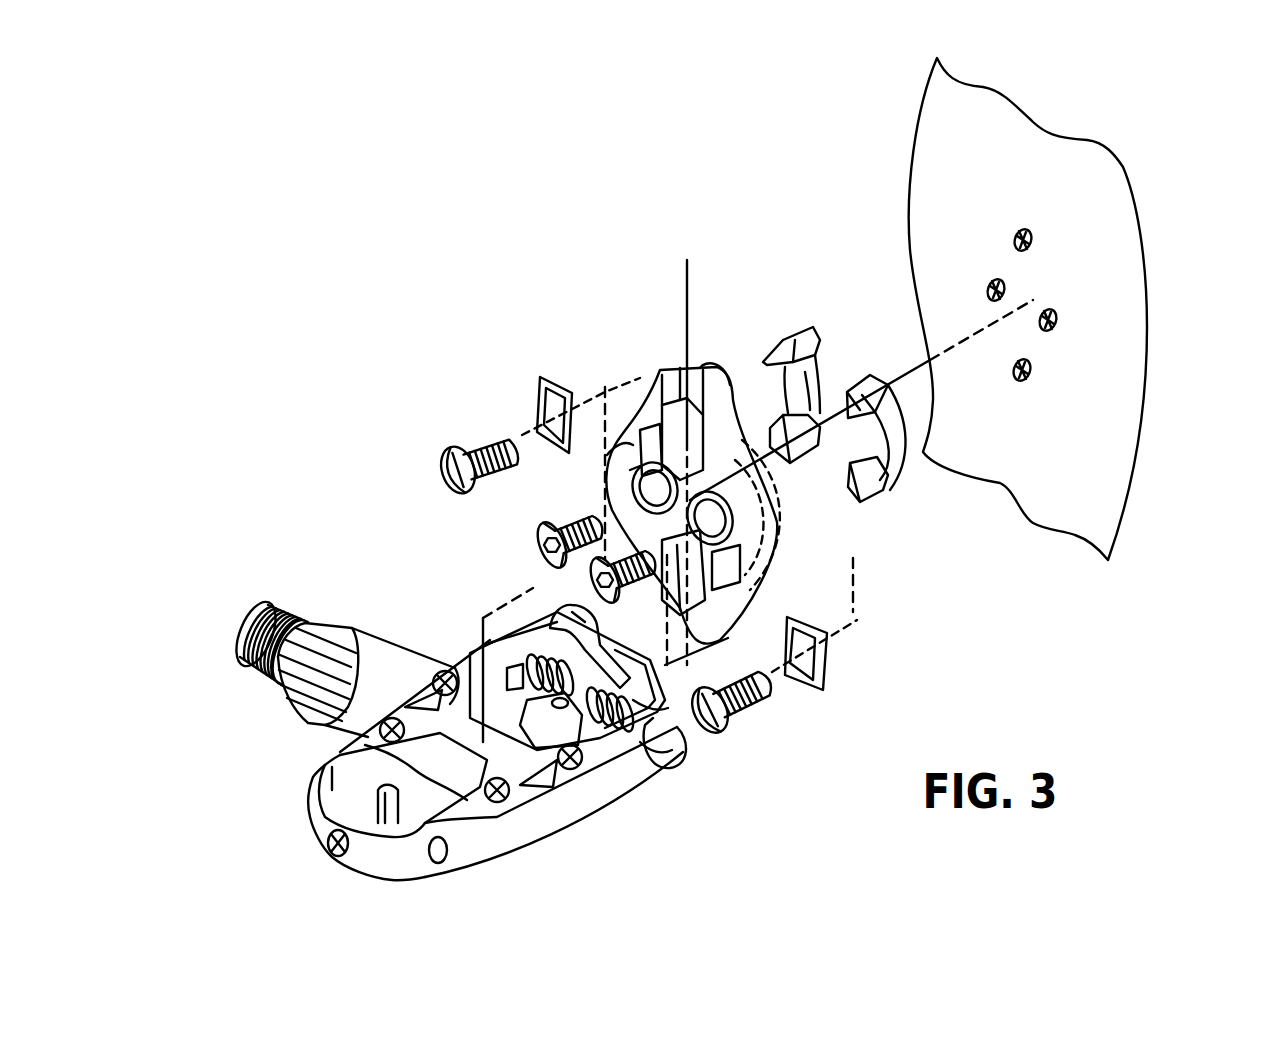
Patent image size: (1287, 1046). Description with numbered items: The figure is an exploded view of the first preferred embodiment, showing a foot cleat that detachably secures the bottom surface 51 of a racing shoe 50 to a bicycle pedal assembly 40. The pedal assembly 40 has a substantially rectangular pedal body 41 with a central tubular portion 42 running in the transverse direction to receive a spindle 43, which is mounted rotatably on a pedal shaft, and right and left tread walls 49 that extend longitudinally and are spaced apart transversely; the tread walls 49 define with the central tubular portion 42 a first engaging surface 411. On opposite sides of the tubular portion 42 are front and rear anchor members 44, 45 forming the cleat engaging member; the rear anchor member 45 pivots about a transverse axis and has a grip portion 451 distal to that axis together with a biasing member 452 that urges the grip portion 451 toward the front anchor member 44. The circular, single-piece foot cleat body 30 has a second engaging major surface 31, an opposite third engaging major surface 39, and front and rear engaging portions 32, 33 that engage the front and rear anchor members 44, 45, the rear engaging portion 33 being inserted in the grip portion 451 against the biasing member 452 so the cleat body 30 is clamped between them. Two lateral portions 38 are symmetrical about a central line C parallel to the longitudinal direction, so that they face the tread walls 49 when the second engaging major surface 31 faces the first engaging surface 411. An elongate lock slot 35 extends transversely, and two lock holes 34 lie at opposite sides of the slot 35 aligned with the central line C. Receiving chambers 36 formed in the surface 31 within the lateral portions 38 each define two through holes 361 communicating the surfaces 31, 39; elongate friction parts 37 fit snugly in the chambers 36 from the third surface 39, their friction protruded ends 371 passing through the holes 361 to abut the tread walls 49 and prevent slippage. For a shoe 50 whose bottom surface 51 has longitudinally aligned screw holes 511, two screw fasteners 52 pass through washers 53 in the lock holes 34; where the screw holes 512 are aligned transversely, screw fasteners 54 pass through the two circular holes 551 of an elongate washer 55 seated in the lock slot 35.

The foot cleat body 30 is at (731, 451).
The second engaging major surface 31 is at (625, 420).
The front engaging portion 32 is at (680, 368).
The rear engaging portion 33 is at (716, 649).
The lock holes 34 is at (673, 363).
The elongate lock slot 35 is at (617, 480).
The receiving chambers 36 is at (768, 540).
The through holes 361 is at (752, 489).
The elongate friction parts 37 is at (768, 434).
The friction protruded ends 371 is at (850, 400).
The lateral portions 38 is at (620, 443).
The third engaging major surface 39 is at (732, 382).
The bicycle pedal assembly 40 is at (474, 732).
The pedal body 41 is at (526, 771).
The first engaging surface 411 is at (510, 775).
The central tubular portion 42 is at (435, 757).
The spindle 43 is at (270, 603).
The front anchor member 44 is at (342, 753).
The rear anchor member 45 is at (590, 610).
The grip portion 451 is at (650, 720).
The biasing member 452 is at (633, 735).
The right and left tread walls 49 is at (500, 782).
The racing shoe 50 is at (1043, 309).
The bottom surface 51 is at (1107, 470).
The screw holes 511 is at (1018, 232).
The screw holes 512 is at (990, 290).
The screw fasteners 52 is at (448, 450).
The washers 53 is at (537, 382).
The screw fasteners 54 is at (587, 592).
The elongate washer 55 is at (633, 488).
The circular holes 551 is at (652, 423).
The central line C is at (690, 330).